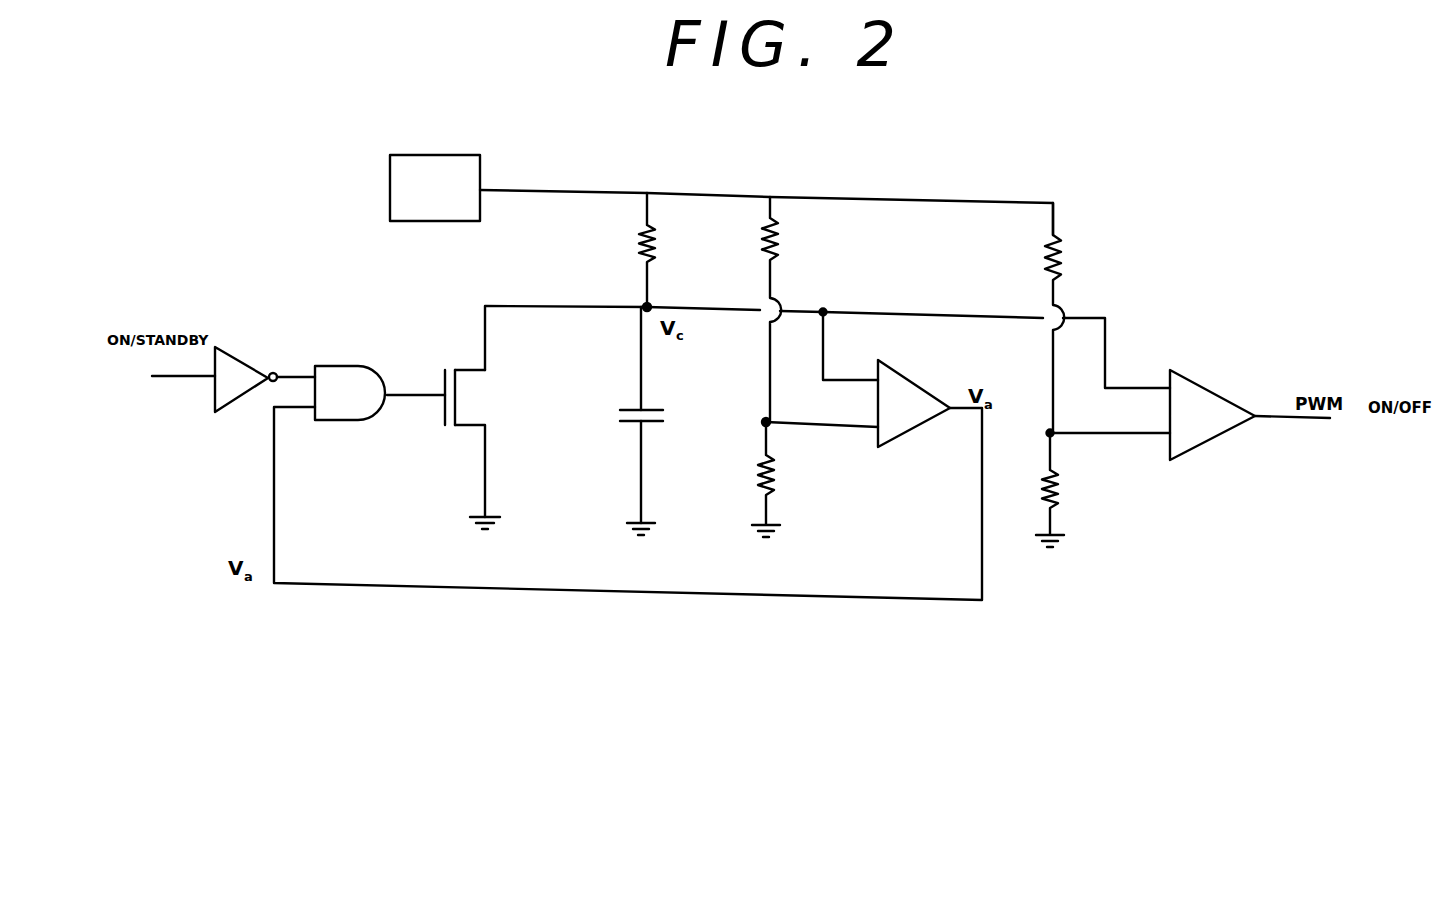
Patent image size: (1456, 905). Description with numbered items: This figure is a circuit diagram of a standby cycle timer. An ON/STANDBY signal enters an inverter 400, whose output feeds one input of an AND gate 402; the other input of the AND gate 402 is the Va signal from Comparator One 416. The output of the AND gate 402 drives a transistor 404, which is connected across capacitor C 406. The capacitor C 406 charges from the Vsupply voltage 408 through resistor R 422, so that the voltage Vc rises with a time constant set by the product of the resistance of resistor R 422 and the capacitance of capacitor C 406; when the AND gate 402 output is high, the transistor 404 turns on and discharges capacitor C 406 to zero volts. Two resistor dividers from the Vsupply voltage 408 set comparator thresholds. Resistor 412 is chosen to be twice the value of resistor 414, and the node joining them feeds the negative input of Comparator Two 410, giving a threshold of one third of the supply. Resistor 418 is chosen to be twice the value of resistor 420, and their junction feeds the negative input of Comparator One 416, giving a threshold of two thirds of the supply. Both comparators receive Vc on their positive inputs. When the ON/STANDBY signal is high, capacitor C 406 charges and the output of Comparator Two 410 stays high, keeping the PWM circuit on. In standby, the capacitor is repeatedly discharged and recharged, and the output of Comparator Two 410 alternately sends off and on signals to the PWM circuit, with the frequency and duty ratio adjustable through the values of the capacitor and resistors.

The inverter 400 is at (244, 353).
The AND gate 402 is at (347, 365).
The transistor Q1 404 is at (466, 368).
The capacitor C 406 is at (630, 410).
The Vsupply voltage 408 is at (437, 155).
The Comparator Two 410 is at (1215, 388).
The resistor 412 is at (1062, 240).
The resistor 414 is at (1060, 492).
The Comparator One 416 is at (910, 376).
The resistor 418 is at (774, 475).
The resistor 420 is at (779, 240).
The resistor R 422 is at (656, 244).